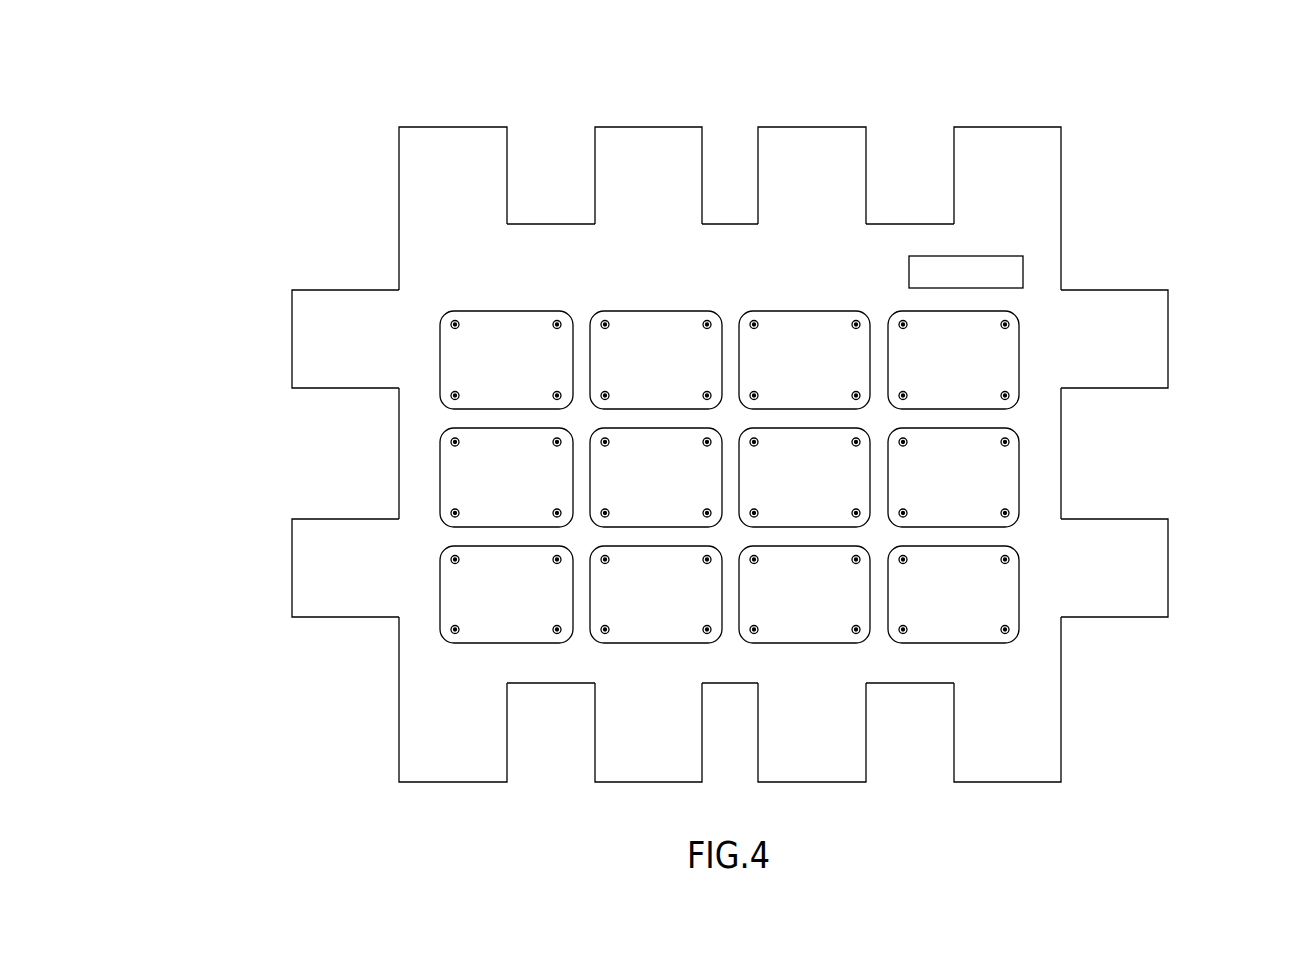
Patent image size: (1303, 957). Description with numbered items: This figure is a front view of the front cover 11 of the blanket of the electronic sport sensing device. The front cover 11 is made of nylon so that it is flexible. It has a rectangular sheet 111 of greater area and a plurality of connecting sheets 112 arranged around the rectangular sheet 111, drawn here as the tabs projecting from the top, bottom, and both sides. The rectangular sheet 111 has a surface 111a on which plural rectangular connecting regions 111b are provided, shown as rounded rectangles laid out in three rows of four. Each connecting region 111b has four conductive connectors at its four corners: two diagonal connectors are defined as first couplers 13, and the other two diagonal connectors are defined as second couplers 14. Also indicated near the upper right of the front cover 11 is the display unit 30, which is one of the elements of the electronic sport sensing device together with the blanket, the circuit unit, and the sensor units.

The front cover 11 is at (699, 437).
The rectangular sheet 111 is at (703, 526).
The surface 111a is at (408, 505).
The connecting region 111b is at (703, 570).
The connecting sheet 112 is at (448, 142).
The first coupler 13 is at (1008, 556).
The second coupler 14 is at (1010, 630).
The display unit 30 is at (1010, 254).